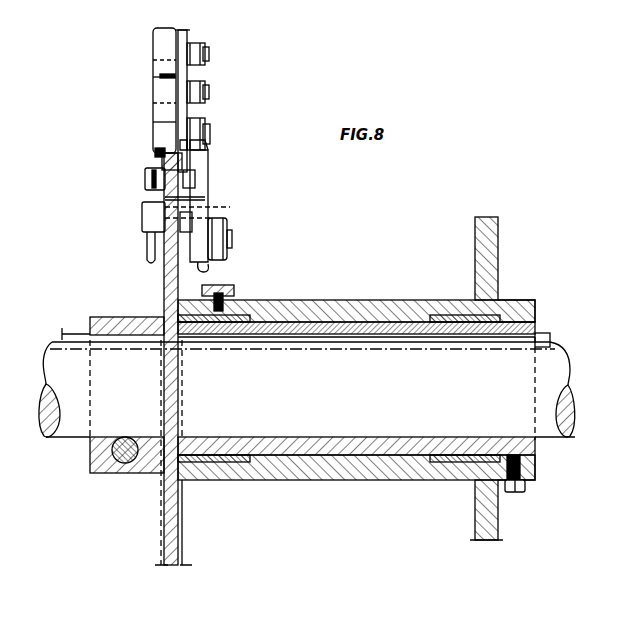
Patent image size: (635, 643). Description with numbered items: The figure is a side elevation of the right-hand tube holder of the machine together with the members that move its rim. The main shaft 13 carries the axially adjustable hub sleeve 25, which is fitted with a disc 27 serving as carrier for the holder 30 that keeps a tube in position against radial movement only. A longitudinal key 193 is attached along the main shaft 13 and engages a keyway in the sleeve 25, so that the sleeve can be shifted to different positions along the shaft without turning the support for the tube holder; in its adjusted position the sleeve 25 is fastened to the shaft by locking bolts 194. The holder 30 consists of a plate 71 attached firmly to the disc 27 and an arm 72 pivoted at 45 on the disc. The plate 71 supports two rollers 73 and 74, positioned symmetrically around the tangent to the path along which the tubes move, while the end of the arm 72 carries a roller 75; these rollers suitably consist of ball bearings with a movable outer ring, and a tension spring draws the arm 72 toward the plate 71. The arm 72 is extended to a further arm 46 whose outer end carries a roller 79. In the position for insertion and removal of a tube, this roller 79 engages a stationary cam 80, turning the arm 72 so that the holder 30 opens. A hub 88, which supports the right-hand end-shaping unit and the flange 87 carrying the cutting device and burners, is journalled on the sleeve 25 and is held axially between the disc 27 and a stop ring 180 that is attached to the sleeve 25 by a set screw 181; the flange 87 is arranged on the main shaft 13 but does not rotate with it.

The main shaft 13 is at (565, 364).
The hub sleeve 25 is at (120, 317).
The disc 27 is at (178, 272).
The holder 30 is at (246, 56).
The pivot 45 is at (193, 228).
The arm 46 is at (203, 272).
The plate 71 is at (190, 116).
The arm 72 is at (208, 164).
The roller 73 is at (154, 43).
The roller 74 is at (155, 148).
The roller 75 is at (154, 100).
The roller 79 is at (228, 224).
The stationary cam 80 is at (234, 291).
The flange 87 is at (497, 258).
The hub 88 is at (297, 300).
The stop ring 180 is at (522, 301).
The set screw 181 is at (526, 486).
The longitudinal key 193 is at (543, 335).
The locking bolt 194 is at (125, 463).